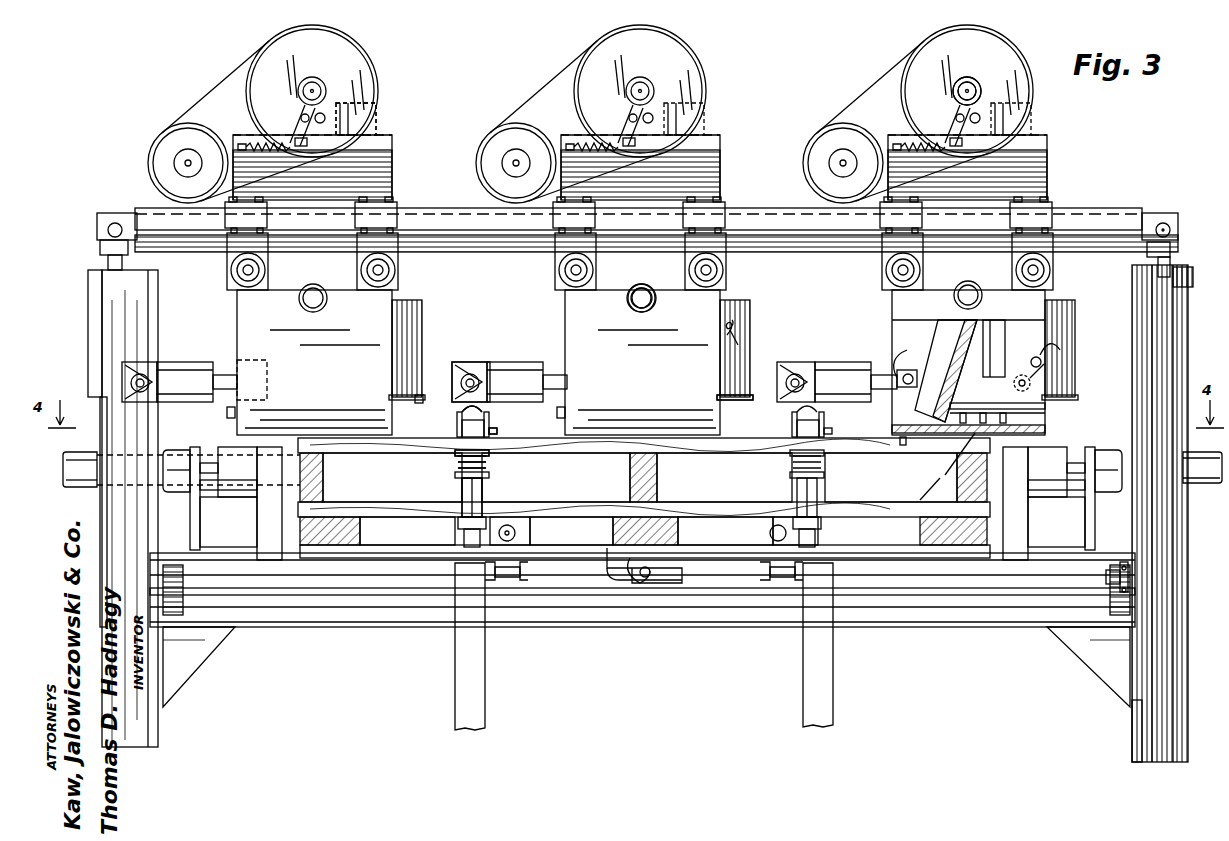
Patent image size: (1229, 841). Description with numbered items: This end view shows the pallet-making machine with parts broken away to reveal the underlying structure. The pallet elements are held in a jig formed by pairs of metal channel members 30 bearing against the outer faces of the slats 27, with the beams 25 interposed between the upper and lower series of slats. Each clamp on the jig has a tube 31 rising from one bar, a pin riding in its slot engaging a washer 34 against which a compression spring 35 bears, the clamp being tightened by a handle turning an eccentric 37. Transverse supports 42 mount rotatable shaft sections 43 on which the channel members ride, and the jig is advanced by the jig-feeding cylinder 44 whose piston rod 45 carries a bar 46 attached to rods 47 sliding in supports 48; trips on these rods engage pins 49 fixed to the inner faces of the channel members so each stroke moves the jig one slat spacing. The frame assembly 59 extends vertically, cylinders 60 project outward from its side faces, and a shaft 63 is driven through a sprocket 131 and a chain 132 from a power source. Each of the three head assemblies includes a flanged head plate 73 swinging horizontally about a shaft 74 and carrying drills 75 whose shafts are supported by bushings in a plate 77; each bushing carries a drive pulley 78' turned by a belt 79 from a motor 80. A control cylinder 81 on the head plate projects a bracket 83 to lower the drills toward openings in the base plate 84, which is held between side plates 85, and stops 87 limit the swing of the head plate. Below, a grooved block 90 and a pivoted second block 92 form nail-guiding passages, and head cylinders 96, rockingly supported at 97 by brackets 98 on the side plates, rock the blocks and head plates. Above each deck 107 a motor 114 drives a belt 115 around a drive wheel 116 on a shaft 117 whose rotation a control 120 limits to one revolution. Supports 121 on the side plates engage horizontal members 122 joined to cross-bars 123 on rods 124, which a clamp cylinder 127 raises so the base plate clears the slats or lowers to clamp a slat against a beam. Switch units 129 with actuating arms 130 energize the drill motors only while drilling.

The beams 25 is at (323, 480).
The slats 27 is at (926, 488).
The channel members 30 is at (489, 420).
The tube 31 is at (482, 490).
The washer 34 is at (489, 472).
The compression spring 35 is at (455, 460).
The eccentric 37 is at (460, 418).
The supports 42 is at (480, 562).
The shaft sections 43 is at (407, 531).
The jig-feeding cylinder 44 is at (650, 580).
The rod 45 is at (628, 575).
The bar 46 is at (690, 517).
The rods 47 is at (512, 525).
The supports 48 is at (505, 555).
The pins 49 is at (497, 431).
The frame assembly 59 is at (115, 333).
The cylinders 60 is at (80, 487).
The shaft 63 is at (945, 600).
The head plate 73 is at (946, 371).
The shaft 74 is at (643, 312).
The drills 75 is at (948, 473).
The plate 77 is at (735, 400).
The drive pulley 78' is at (409, 413).
The belt 79 is at (1045, 408).
The motor 80 is at (740, 302).
The control cylinder 81 is at (1005, 330).
The bracket 83 is at (1022, 375).
The base plate 84 is at (1045, 430).
The side plates 85 is at (642, 359).
The stops 87 is at (1006, 418).
The block 90 is at (906, 361).
The second block 92 is at (903, 374).
The cylinders 96 is at (518, 368).
The rocking support 97 is at (798, 365).
The brackets 98 is at (478, 352).
The deck portions 107 is at (1040, 140).
The motors 114 is at (832, 130).
The belts 115 is at (880, 85).
The drive wheels 116 is at (995, 50).
The shafts 117 is at (975, 83).
The control 120 is at (362, 103).
The supports 121 is at (1030, 205).
The horizontally extending members 122 is at (1100, 228).
The cross-bars 123 is at (1163, 223).
The rods 124 is at (1170, 262).
The cylinder 127 is at (1153, 270).
The switch units 129 is at (748, 340).
The actuating arms 130 is at (1050, 355).
The sprocket 131 is at (1128, 578).
The chain 132 is at (1140, 720).